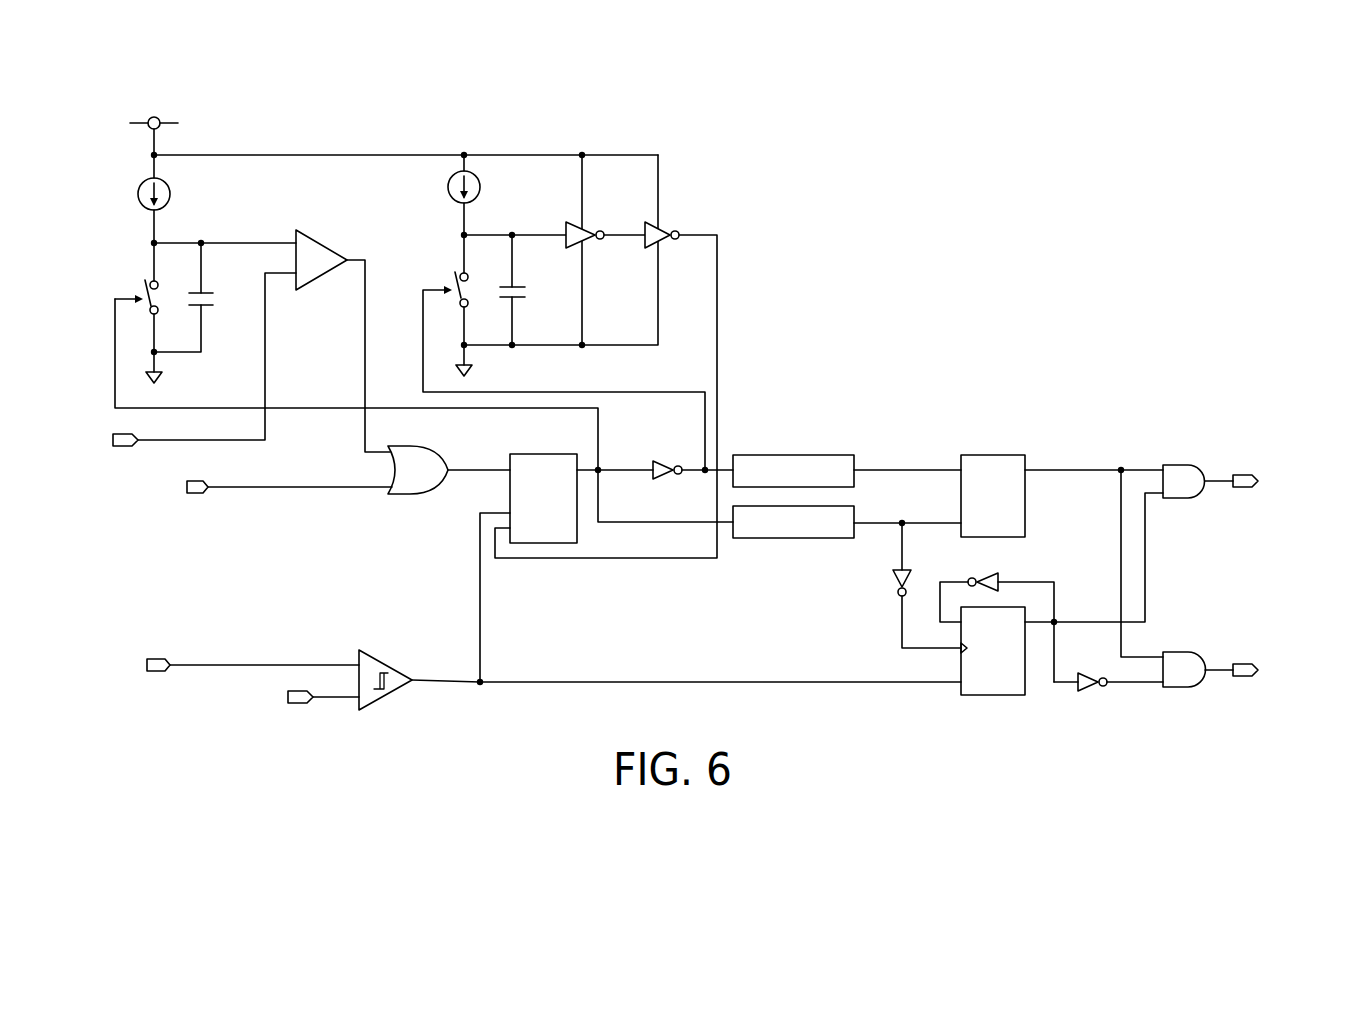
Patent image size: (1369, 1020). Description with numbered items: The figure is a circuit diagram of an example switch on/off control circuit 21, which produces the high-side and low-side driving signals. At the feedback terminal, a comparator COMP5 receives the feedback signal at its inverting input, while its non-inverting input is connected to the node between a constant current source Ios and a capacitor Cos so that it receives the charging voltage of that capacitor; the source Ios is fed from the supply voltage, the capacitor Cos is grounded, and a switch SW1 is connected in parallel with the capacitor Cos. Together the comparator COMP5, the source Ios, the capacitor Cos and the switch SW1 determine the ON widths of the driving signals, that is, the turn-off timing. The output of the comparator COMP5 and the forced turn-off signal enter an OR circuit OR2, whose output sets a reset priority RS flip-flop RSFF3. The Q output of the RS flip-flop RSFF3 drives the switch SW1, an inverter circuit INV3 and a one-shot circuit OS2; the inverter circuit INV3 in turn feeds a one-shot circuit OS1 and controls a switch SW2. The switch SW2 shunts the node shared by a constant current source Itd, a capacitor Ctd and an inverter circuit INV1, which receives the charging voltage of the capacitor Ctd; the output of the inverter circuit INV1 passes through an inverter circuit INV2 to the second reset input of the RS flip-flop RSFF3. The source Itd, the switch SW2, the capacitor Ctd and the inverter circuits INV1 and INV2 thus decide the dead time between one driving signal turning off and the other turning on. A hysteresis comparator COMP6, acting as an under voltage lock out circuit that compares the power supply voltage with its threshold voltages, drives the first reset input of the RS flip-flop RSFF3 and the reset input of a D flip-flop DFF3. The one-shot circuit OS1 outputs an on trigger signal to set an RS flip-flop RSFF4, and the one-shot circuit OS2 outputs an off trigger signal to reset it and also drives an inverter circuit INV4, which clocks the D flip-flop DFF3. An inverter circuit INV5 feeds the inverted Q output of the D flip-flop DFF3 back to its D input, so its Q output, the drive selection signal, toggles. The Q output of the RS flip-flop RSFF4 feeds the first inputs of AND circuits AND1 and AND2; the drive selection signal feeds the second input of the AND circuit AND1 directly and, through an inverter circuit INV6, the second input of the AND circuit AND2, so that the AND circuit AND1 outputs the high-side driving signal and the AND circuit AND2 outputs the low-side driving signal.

The switch on/off control circuit 21 is at (1088, 224).
The constant current source Ios is at (129, 194).
The constant current source Itd is at (444, 186).
The capacitor Cos is at (222, 315).
The capacitor Ctd is at (531, 275).
The switch SW1 is at (117, 290).
The switch SW2 is at (432, 278).
The comparator COMP5 is at (325, 244).
The hysteresis comparator COMP6 is at (387, 665).
The OR circuit OR2 is at (417, 456).
The reset priority RS flip-flop RSFF3 is at (539, 484).
The RS flip-flop RSFF4 is at (1000, 478).
The D flip-flop DFF3 is at (989, 666).
The inverter circuit INV1 is at (608, 222).
The inverter circuit INV2 is at (684, 222).
The inverter circuit INV3 is at (660, 456).
The inverter circuit INV4 is at (870, 570).
The inverter circuit INV5 is at (992, 568).
The inverter circuit INV6 is at (1091, 698).
The one-shot circuit OS1 is at (800, 455).
The one-shot circuit OS2 is at (795, 538).
The AND circuit AND1 is at (1184, 464).
The AND circuit AND2 is at (1184, 652).